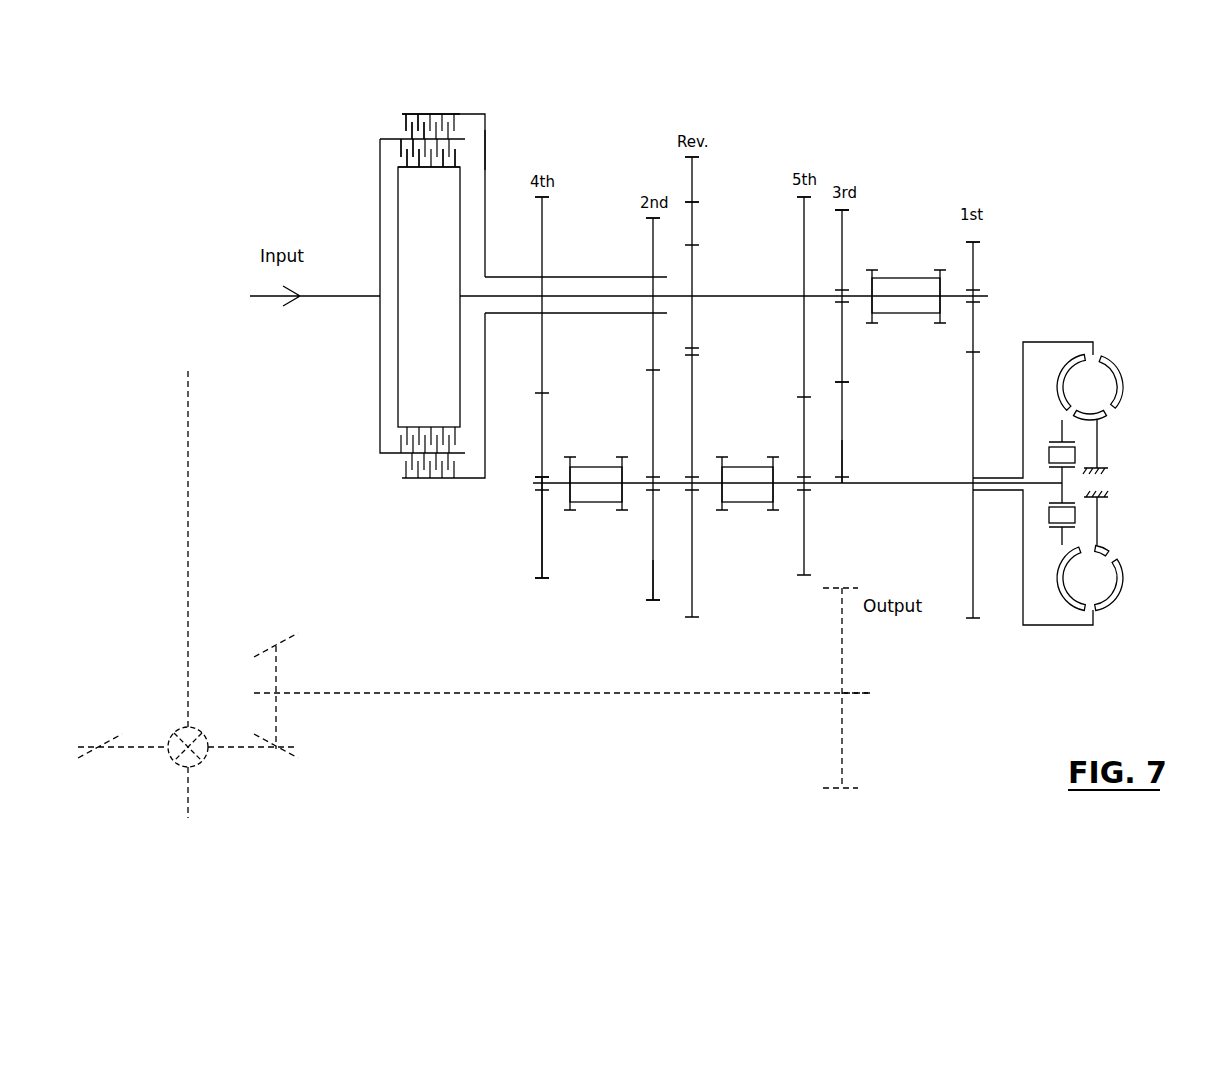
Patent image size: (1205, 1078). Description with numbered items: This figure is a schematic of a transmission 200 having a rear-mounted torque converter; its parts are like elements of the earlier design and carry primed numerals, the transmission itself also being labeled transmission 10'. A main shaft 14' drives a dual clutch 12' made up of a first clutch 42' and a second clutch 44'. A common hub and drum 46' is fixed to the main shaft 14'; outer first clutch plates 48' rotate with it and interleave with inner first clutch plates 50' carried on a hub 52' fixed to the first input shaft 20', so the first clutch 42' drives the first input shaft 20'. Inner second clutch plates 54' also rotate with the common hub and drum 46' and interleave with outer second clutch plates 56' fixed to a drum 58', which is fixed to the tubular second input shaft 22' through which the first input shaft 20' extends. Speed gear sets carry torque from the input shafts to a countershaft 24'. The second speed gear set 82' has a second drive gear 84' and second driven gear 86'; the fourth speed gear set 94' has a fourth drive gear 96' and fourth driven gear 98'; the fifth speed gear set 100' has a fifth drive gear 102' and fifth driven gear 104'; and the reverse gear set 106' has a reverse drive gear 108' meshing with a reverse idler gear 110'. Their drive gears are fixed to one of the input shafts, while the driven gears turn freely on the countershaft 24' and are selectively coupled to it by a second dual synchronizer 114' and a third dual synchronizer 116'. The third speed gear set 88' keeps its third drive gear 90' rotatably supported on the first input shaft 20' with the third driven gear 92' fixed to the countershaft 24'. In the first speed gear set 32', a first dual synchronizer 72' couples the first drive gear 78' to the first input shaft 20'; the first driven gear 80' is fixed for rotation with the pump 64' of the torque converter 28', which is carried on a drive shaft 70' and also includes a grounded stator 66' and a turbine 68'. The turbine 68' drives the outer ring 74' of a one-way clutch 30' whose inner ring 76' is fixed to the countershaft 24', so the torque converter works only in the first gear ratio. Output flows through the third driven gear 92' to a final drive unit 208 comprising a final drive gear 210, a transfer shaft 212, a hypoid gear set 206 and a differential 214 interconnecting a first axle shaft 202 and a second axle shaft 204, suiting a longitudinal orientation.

The transmission 10' is at (514, 73).
The dual clutch 12' is at (442, 103).
The main shaft 14' is at (315, 270).
The first input shaft 20' is at (700, 324).
The second input shaft 22' is at (576, 268).
The countershaft 24' is at (797, 509).
The torque converter 28' is at (1117, 432).
The one-way clutch 30' is at (1083, 442).
The first speed gear set 32' is at (948, 196).
The first clutch 42' is at (429, 297).
The second clutch 44' is at (463, 271).
The common hub and drum 46' is at (381, 295).
The outer first clutch plates 48' is at (402, 190).
The inner first clutch plates 50' is at (442, 190).
The hub 52' is at (474, 163).
The inner second clutch plates 54' is at (495, 122).
The outer second clutch plates 56' is at (486, 106).
The drum 58' is at (533, 149).
The pump 64' is at (1142, 356).
The stator 66' is at (1090, 392).
The turbine 68' is at (1067, 331).
The drive shaft 70' is at (1023, 476).
The first dual synchronizer 72' is at (906, 319).
The outer ring 74' is at (1033, 388).
The inner ring 76' is at (1124, 482).
The first drive gear 78' is at (997, 422).
The first driven gear 80' is at (995, 483).
The second speed gear set 82' is at (641, 169).
The second drive gear 84' is at (631, 401).
The second driven gear 86' is at (636, 594).
The third speed gear set 88' is at (865, 164).
The third drive gear 90' is at (864, 337).
The third driven gear 92' is at (880, 461).
The fourth speed gear set 94' is at (578, 178).
The fourth drive gear 96' is at (569, 387).
The fourth driven gear 98' is at (513, 527).
The fifth speed gear set 100' is at (778, 150).
The fifth drive gear 102' is at (764, 385).
The fifth driven gear 104' is at (802, 389).
The reverse gear set 106' is at (664, 117).
The reverse drive gear 108' is at (730, 387).
The reverse idler gear 110' is at (730, 184).
The second dual synchronizer 114' is at (596, 510).
The third dual synchronizer 116' is at (747, 510).
The transmission 200 is at (862, 95).
The first axle shaft 202 is at (188, 452).
The second axle shaft 204 is at (188, 787).
The hypoid gear set 206 is at (276, 752).
The final drive unit 208 is at (885, 713).
The final drive gear 210 is at (842, 630).
The transfer shaft 212 is at (505, 693).
The differential 214 is at (178, 730).